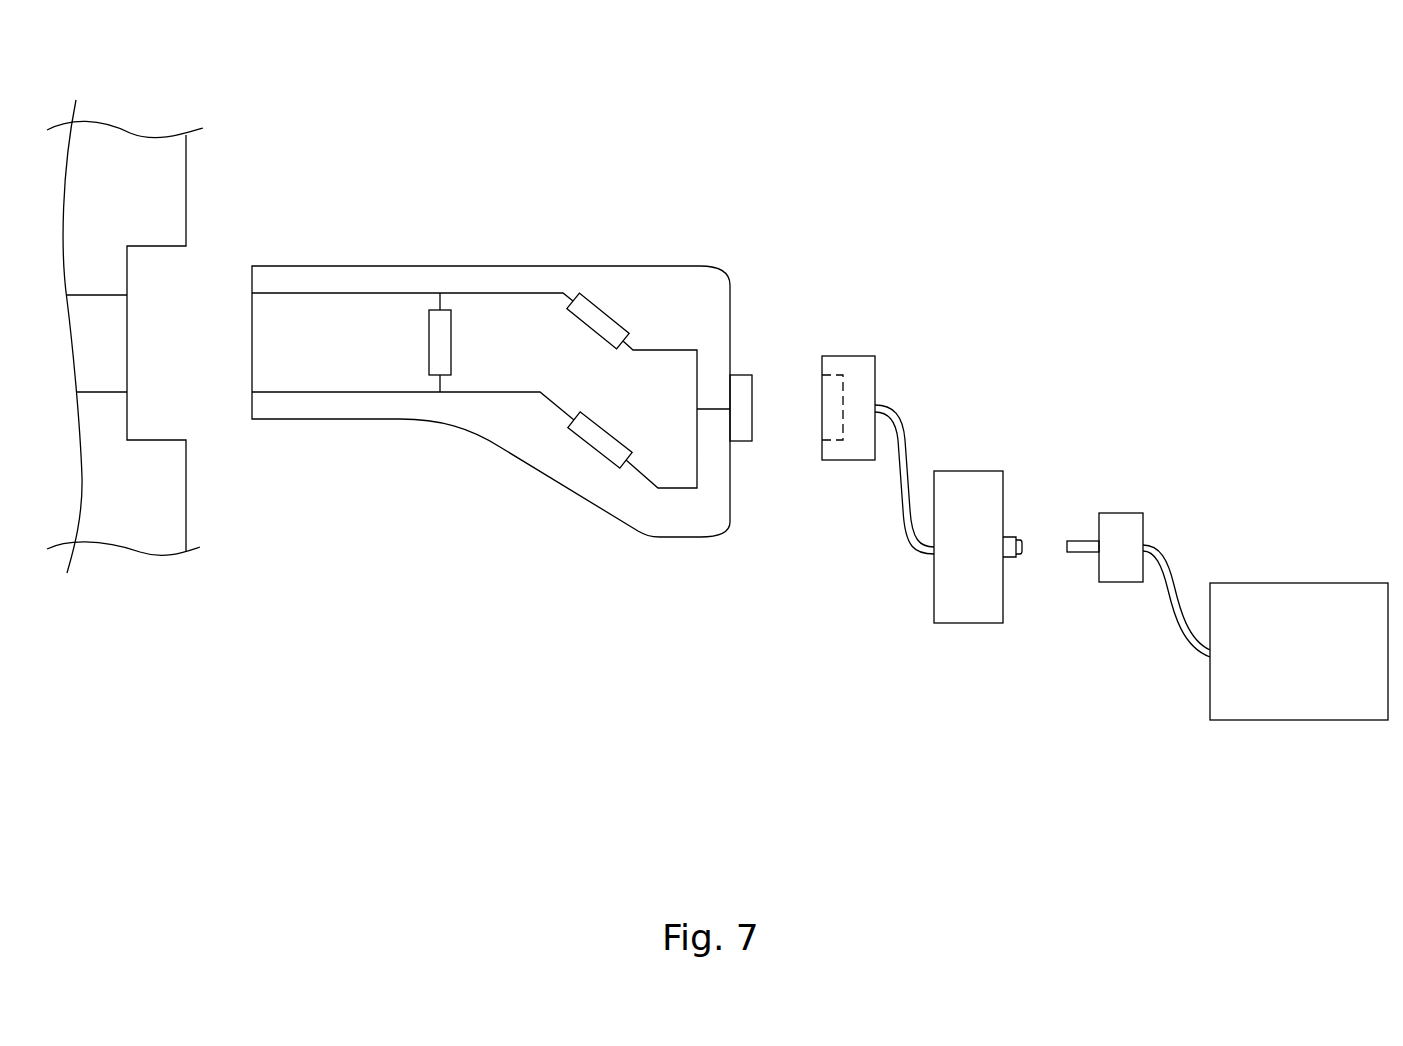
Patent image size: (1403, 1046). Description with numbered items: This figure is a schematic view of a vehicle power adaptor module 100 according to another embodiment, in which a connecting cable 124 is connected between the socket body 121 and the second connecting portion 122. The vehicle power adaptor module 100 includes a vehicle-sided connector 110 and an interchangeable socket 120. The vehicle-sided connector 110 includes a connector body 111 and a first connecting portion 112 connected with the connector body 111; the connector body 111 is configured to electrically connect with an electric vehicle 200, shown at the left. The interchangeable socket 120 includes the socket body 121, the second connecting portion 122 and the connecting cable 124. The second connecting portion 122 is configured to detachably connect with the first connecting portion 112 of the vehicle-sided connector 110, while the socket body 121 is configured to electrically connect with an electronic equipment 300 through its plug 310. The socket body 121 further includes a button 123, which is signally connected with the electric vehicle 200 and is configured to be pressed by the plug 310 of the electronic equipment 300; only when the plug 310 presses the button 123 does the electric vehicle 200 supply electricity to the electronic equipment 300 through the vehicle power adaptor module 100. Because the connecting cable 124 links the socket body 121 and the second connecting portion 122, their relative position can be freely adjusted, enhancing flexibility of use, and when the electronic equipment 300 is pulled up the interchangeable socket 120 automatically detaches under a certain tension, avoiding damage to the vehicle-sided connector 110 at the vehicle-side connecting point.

The electric vehicle 200 is at (142, 143).
The vehicle power adaptor module 100 is at (933, 177).
The vehicle-sided connector 110 is at (773, 225).
The connector body 111 is at (675, 283).
The first connecting portion 112 is at (747, 383).
The interchangeable socket 120 is at (1012, 225).
The socket body 121 is at (968, 483).
The second connecting portion 122 is at (857, 382).
The button 123 is at (1010, 542).
The connecting cable 124 is at (897, 415).
The plug 310 is at (1120, 522).
The electronic equipment 300 is at (1303, 598).